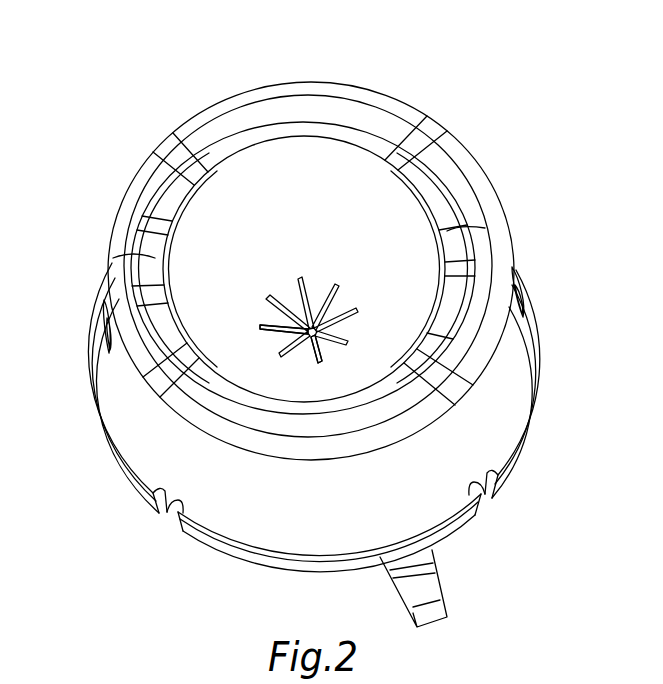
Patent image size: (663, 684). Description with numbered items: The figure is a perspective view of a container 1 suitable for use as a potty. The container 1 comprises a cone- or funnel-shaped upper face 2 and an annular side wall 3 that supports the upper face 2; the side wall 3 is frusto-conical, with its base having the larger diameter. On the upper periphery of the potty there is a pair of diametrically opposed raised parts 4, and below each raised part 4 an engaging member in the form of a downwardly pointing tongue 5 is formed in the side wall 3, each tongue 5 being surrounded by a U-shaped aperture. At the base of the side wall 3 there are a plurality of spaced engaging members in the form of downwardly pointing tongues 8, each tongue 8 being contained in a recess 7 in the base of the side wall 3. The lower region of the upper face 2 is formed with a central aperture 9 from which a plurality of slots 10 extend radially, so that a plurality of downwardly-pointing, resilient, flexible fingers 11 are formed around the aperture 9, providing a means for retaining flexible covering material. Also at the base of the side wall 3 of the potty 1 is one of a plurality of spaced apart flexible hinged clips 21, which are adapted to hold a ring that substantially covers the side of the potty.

The container 1 is at (552, 107).
The upper face 2 is at (265, 173).
The side wall 3 is at (512, 383).
The raised parts 4 is at (115, 257).
The tongue 5 is at (105, 327).
The recess 7 is at (160, 511).
The tongues 8 is at (172, 518).
The central aperture 9 is at (344, 330).
The slots 10 is at (296, 349).
The fingers 11 is at (274, 342).
The flexible hinged clips 21 is at (432, 628).